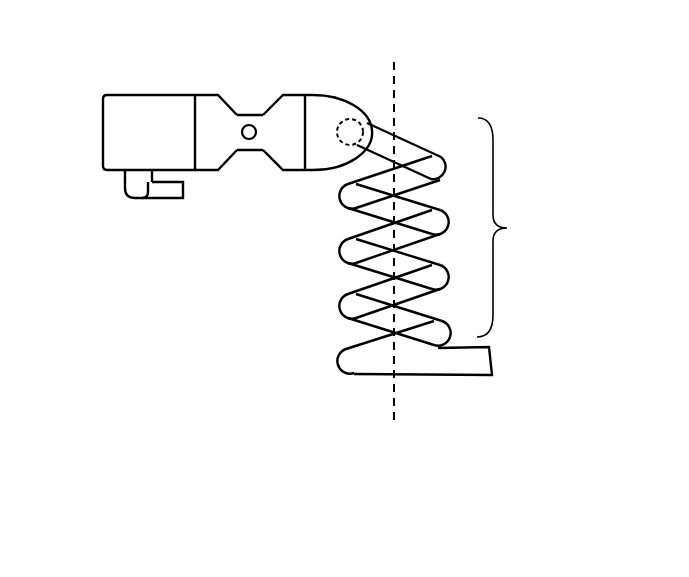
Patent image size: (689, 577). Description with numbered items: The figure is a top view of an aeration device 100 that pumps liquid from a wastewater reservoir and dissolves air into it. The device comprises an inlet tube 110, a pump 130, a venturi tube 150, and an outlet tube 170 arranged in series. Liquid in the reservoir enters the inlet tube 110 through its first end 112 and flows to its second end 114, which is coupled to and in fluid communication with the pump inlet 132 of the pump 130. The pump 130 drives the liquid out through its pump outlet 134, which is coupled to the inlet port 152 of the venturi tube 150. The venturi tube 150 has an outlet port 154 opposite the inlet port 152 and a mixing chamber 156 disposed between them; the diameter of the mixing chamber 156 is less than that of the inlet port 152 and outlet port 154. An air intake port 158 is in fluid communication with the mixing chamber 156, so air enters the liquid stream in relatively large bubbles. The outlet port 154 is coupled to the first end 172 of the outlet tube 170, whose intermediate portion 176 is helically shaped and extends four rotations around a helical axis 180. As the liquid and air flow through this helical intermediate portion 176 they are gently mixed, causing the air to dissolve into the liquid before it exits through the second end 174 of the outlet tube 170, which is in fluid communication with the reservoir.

The aeration device 100 is at (510, 77).
The inlet tube 110 is at (138, 215).
The first end 112 is at (182, 200).
The second end 114 is at (125, 180).
The pump 130 is at (100, 83).
The pump inlet 132 is at (122, 172).
The pump outlet 134 is at (200, 123).
The venturi tube 150 is at (270, 184).
The inlet port 152 is at (206, 128).
The outlet port 154 is at (302, 116).
The mixing chamber 156 is at (217, 150).
The air intake port 158 is at (249, 124).
The outlet tube 170 is at (334, 271).
The first end 172 is at (307, 133).
The second end 174 is at (493, 360).
The intermediate portion 176 is at (517, 227).
The helical axis 180 is at (396, 68).